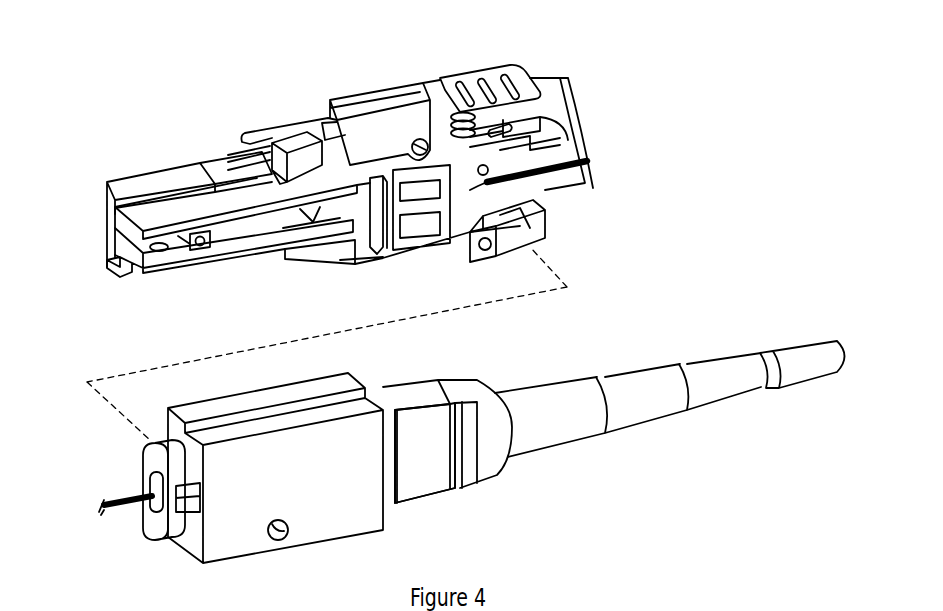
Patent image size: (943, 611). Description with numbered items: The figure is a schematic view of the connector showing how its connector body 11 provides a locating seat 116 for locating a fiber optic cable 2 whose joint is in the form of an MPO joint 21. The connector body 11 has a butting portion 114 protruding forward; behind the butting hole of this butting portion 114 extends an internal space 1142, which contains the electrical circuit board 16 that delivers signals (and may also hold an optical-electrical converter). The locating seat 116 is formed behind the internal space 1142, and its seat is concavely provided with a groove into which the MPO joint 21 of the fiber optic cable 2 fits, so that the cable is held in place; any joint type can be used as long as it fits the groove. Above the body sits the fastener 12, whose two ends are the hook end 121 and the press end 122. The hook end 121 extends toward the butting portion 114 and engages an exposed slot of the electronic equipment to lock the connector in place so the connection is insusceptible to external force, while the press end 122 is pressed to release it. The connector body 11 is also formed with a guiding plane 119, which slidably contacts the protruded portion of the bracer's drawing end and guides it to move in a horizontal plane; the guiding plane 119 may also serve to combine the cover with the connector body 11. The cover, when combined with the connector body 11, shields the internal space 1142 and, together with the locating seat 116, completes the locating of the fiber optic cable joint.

The butting portion 114 is at (148, 190).
The electrical circuit board 16 is at (155, 212).
The connector body 11 is at (413, 258).
The internal space 1142 is at (275, 228).
The hook end 121 is at (272, 137).
The fastener 12 is at (413, 108).
The press end 122 is at (487, 82).
The guiding plane 119 is at (556, 95).
The locating seat 116 is at (517, 197).
The MPO joint 21 is at (422, 413).
The fiber optic cable 2 is at (540, 402).